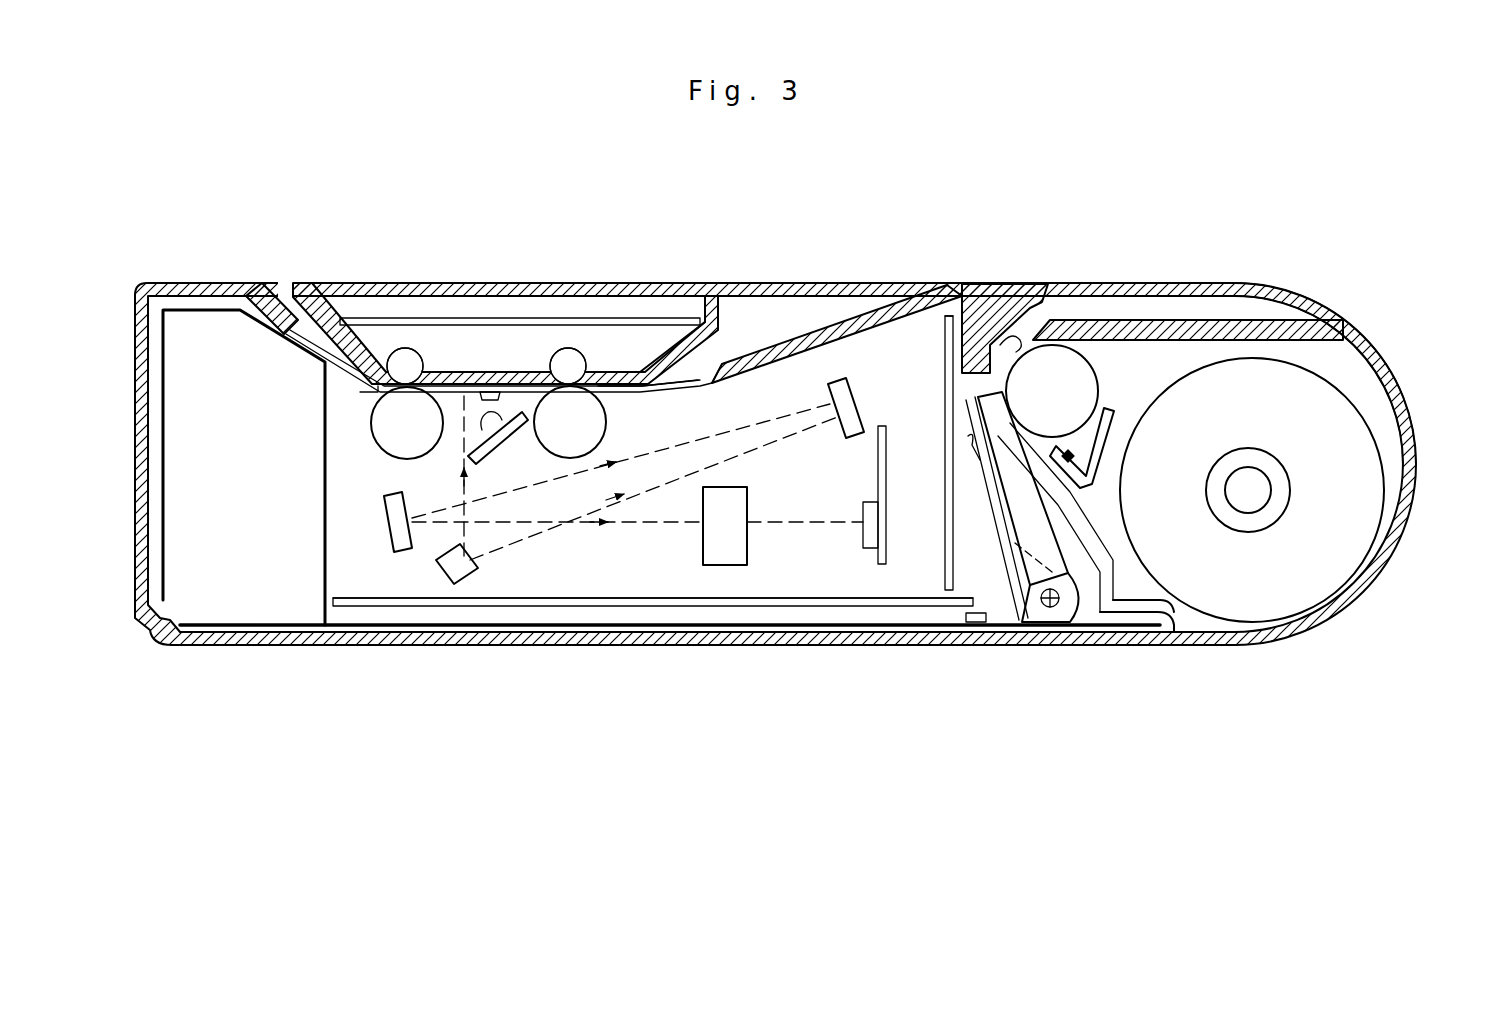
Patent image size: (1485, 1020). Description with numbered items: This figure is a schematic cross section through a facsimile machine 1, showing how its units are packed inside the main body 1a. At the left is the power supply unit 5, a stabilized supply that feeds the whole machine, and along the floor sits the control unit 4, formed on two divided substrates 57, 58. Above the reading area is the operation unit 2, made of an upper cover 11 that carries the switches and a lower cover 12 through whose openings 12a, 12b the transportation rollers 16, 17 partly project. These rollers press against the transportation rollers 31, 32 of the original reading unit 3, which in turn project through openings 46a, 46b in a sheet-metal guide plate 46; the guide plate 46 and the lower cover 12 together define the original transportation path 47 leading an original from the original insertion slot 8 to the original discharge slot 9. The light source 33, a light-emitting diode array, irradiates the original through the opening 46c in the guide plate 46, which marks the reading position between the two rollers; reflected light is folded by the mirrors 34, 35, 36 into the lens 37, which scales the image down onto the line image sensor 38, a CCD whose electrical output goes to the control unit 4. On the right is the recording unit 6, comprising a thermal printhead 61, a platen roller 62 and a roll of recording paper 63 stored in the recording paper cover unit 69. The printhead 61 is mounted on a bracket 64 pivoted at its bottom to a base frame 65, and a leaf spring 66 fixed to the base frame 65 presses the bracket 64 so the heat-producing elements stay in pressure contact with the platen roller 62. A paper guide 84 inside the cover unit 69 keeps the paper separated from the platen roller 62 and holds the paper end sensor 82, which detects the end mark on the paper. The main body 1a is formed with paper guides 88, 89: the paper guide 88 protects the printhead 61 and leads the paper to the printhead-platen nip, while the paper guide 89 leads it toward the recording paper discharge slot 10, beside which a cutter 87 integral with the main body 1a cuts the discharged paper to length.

The facsimile machine 1 is at (1150, 270).
The main body 1a is at (140, 340).
The operation unit 2 is at (612, 280).
The original reading unit 3 is at (840, 366).
The control unit 4 is at (575, 597).
The power supply unit 5 is at (244, 467).
The recording unit 6 is at (1342, 306).
The original insertion slot 8 is at (882, 303).
The original discharge slot 9 is at (280, 297).
The recording paper discharge slot 10 is at (1063, 306).
The upper cover 11 is at (686, 284).
The lower cover 12 is at (690, 365).
The opening 12a is at (570, 350).
The opening 12b is at (397, 352).
The transportation roller 16 is at (576, 368).
The transportation roller 17 is at (413, 363).
The transportation roller 31 is at (600, 432).
The transportation roller 32 is at (383, 441).
The light source 33 is at (512, 438).
The mirror 34 is at (480, 566).
The mirror 35 is at (856, 416).
The mirror 36 is at (386, 536).
The lens 37 is at (725, 526).
The line image sensor 38 is at (863, 505).
The guide plate 46 is at (700, 383).
The opening 46a is at (603, 394).
The opening 46b is at (376, 396).
The opening 46c is at (490, 392).
The original transportation path 47 is at (724, 358).
The substrate 57 is at (640, 597).
The substrate 58 is at (944, 512).
The thermal printhead 61 is at (1070, 540).
The platen roller 62 is at (1084, 384).
The recording paper 63 is at (1252, 490).
The bracket 64 is at (1060, 626).
The base frame 65 is at (256, 624).
The leaf spring 66 is at (990, 632).
The recording paper cover unit 69 is at (1411, 405).
The paper end sensor 82 is at (1068, 450).
The paper guide 84 is at (1113, 440).
The cutter 87 is at (1040, 302).
The paper guide 88 is at (1125, 588).
The paper guide 89 is at (1010, 302).